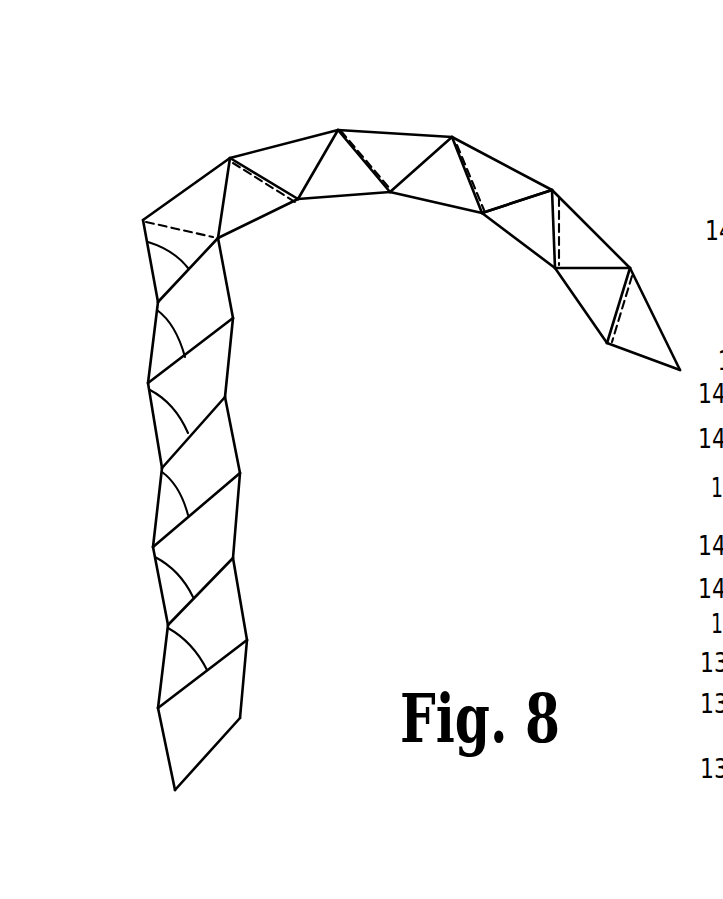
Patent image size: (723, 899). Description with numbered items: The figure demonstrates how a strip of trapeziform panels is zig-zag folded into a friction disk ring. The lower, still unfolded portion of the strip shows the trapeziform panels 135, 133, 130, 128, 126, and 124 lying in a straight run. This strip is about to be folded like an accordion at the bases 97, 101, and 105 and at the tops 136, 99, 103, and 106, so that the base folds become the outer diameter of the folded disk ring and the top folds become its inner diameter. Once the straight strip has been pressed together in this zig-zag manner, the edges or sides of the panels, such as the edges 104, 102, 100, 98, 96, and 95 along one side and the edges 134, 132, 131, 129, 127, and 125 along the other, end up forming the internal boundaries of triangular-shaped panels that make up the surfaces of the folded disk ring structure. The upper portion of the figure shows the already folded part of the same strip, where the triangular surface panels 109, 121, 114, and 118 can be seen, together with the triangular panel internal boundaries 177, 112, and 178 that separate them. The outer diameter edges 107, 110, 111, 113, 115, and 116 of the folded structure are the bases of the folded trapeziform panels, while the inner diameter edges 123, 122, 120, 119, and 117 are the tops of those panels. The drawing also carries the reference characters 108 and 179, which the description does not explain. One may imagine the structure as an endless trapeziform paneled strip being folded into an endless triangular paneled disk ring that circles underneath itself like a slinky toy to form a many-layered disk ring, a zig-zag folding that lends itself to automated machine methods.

The panel edge 95 is at (163, 742).
The panel edge 96 is at (162, 670).
The base fold 97 is at (160, 595).
The panel edge 98 is at (167, 614).
The top fold 99 is at (155, 557).
The panel edge 100 is at (157, 512).
The base fold 101 is at (162, 470).
The panel edge 102 is at (152, 425).
The top fold 103 is at (148, 383).
The panel edge 104 is at (150, 350).
The base fold 105 is at (158, 300).
The top fold 106 is at (147, 241).
The outer diameter edge 107 is at (185, 190).
The hidden fold line 108 is at (188, 230).
The triangular surface panel 109 is at (245, 182).
The outer diameter edge 110 is at (273, 147).
The outer diameter edge 111 is at (383, 130).
The triangular panel internal boundary 112 is at (378, 155).
The outer diameter edge 113 is at (513, 168).
The triangular surface panel 114 is at (445, 180).
The outer diameter edge 115 is at (580, 217).
The outer diameter edge 116 is at (650, 302).
The inner diameter edge 117 is at (580, 307).
The triangular surface panel 118 is at (533, 227).
The inner diameter edge 119 is at (512, 238).
The inner diameter edge 120 is at (422, 198).
The triangular surface panel 121 is at (345, 173).
The inner diameter edge 122 is at (337, 200).
The inner diameter edge 123 is at (262, 218).
The trapeziform panel 124 is at (203, 282).
The panel edge 125 is at (235, 300).
The trapeziform panel 126 is at (215, 352).
The panel edge 127 is at (228, 370).
The trapeziform panel 128 is at (220, 440).
The panel edge 129 is at (243, 460).
The trapeziform panel 130 is at (218, 528).
The panel edge 131 is at (235, 545).
The panel edge 132 is at (242, 590).
The trapeziform panel 133 is at (230, 627).
The panel edge 134 is at (245, 675).
The trapeziform panel 135 is at (217, 708).
The top fold 136 is at (215, 748).
The triangular panel internal boundary 177 is at (318, 155).
The triangular panel internal boundary 178 is at (595, 268).
The edge segment 179 is at (645, 357).